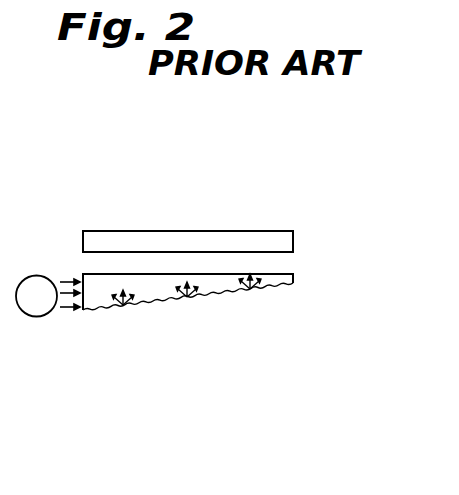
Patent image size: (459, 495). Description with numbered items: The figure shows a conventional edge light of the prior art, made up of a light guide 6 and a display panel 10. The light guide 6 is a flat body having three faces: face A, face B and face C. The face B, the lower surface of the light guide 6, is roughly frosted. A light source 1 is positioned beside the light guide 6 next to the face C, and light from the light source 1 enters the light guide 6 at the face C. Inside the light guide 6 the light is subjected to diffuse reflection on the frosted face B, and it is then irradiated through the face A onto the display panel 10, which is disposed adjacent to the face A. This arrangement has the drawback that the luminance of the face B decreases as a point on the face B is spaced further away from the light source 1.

The light source 1 is at (38, 317).
The face C is at (83, 286).
The display panel 10 is at (285, 230).
The light guide 6 is at (295, 281).
The face A is at (279, 274).
The face B is at (205, 298).